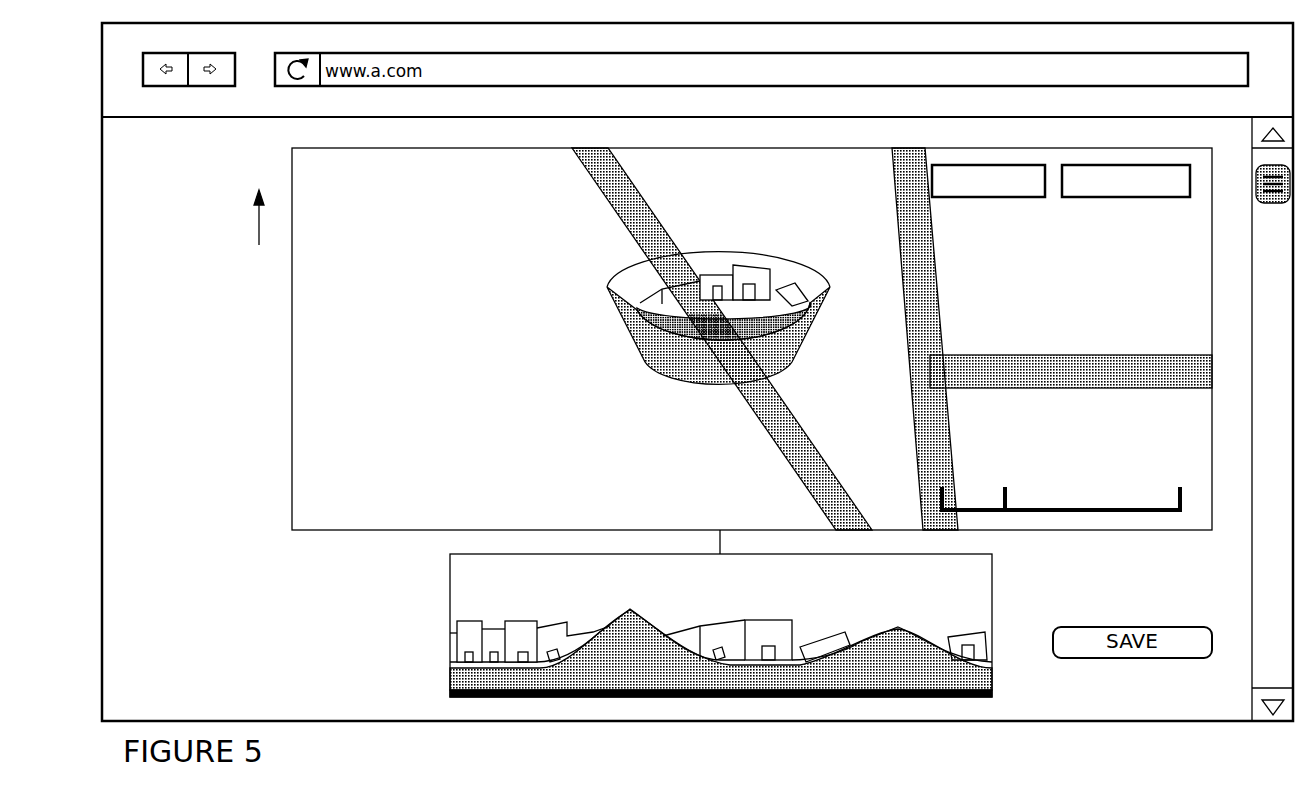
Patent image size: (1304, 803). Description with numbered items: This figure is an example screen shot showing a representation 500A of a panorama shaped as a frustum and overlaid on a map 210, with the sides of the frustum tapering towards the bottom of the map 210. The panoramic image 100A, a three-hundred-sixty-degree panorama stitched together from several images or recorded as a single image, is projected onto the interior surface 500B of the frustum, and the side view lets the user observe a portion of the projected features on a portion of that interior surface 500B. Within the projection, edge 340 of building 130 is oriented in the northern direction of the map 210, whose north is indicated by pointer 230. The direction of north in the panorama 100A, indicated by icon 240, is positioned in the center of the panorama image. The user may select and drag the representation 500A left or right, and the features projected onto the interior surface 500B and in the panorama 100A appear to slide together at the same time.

The map 210 is at (291, 389).
The pointer 230 is at (258, 229).
The edge of building 340 is at (697, 275).
The representation 500A is at (632, 345).
The interior surface 500B is at (636, 274).
The building 130 is at (723, 272).
The panoramic image 100A is at (449, 628).
The icon 240 is at (712, 580).